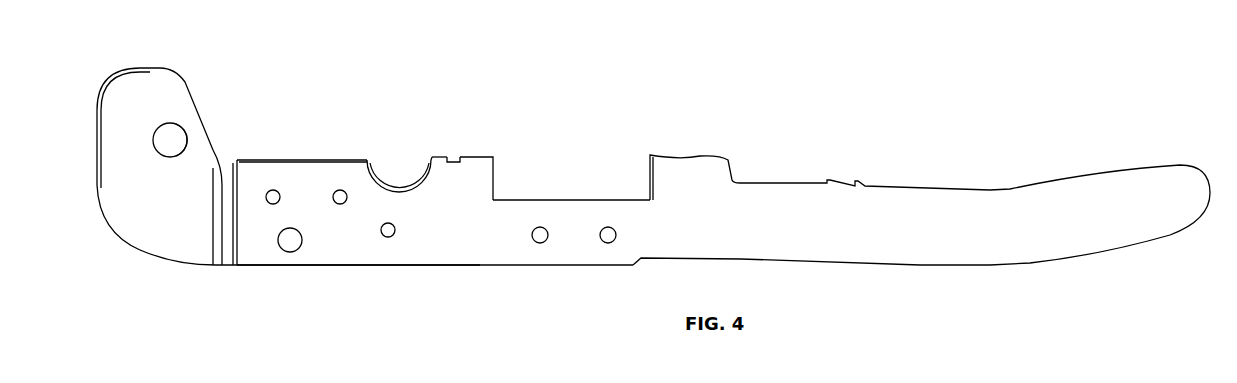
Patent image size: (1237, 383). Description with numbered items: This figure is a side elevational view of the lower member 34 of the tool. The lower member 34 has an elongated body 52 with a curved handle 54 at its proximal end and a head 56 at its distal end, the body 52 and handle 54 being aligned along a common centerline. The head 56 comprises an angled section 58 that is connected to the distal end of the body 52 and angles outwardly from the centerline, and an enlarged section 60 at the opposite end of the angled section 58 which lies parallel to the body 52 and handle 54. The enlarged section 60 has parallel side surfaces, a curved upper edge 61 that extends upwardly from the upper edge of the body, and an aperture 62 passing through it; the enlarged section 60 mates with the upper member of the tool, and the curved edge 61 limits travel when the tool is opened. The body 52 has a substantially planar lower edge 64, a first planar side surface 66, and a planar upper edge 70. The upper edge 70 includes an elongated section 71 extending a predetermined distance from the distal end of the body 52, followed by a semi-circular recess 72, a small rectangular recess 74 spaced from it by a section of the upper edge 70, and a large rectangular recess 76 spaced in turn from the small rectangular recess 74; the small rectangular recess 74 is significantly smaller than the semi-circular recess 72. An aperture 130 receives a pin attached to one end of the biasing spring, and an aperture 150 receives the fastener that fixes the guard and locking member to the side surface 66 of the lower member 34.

The lower member 34 is at (707, 113).
The body 52 is at (498, 243).
The curved handle 54 is at (922, 247).
The head 56 is at (170, 236).
The angled section 58 is at (227, 250).
The enlarged section 60 is at (165, 102).
The upper edge 61 is at (190, 90).
The aperture 62 is at (172, 138).
The lower edge 64 is at (592, 266).
The first planar side surface 66 is at (440, 235).
The upper edge 70 is at (307, 160).
The elongated section 71 is at (283, 160).
The semi-circular recess 72 is at (376, 176).
The small rectangular recess 74 is at (453, 157).
The large rectangular recess 76 is at (530, 200).
The aperture 130 is at (290, 252).
The aperture 150 is at (385, 238).